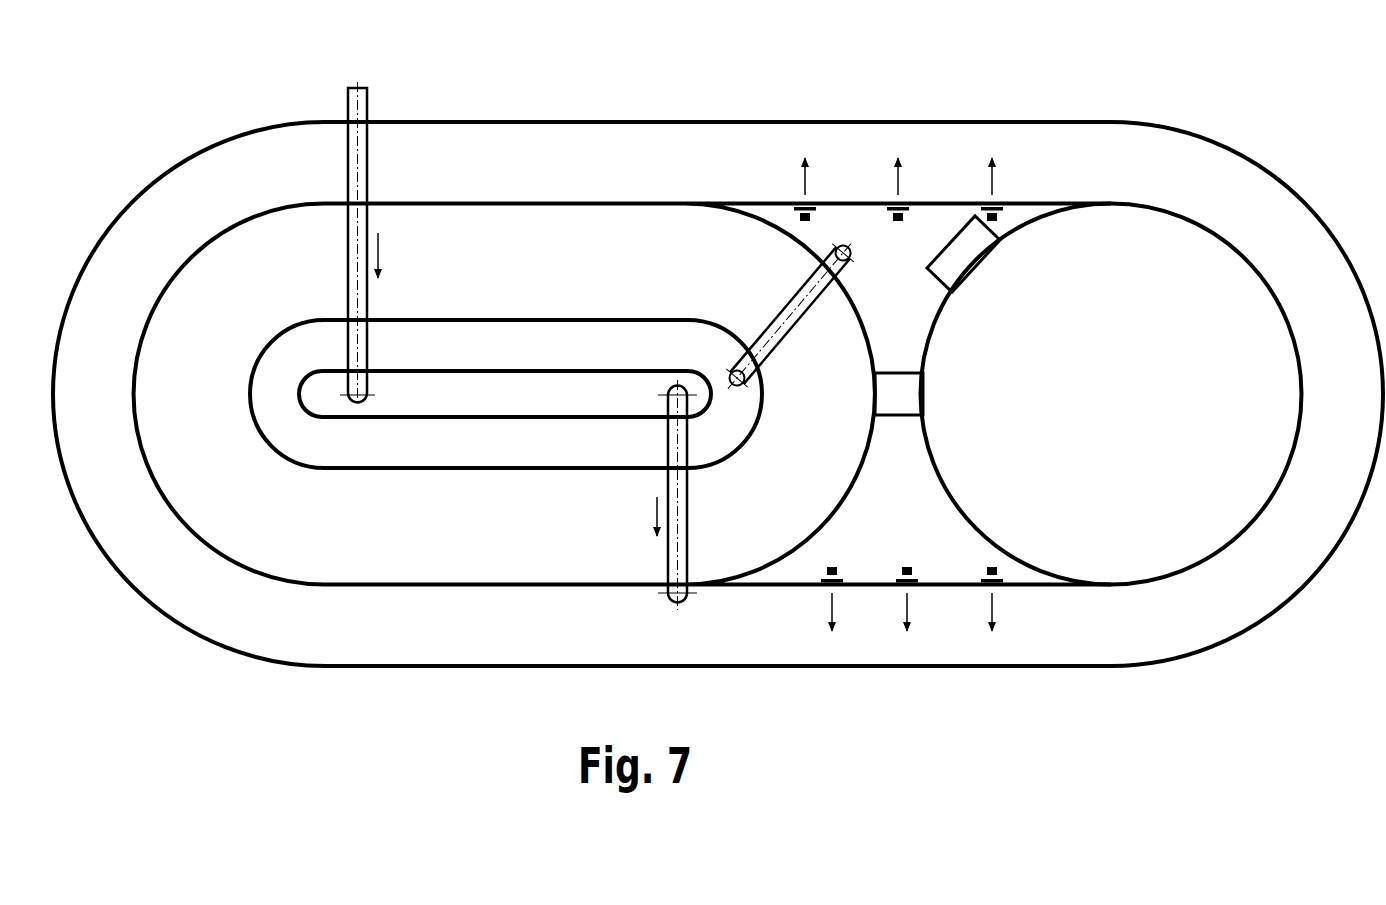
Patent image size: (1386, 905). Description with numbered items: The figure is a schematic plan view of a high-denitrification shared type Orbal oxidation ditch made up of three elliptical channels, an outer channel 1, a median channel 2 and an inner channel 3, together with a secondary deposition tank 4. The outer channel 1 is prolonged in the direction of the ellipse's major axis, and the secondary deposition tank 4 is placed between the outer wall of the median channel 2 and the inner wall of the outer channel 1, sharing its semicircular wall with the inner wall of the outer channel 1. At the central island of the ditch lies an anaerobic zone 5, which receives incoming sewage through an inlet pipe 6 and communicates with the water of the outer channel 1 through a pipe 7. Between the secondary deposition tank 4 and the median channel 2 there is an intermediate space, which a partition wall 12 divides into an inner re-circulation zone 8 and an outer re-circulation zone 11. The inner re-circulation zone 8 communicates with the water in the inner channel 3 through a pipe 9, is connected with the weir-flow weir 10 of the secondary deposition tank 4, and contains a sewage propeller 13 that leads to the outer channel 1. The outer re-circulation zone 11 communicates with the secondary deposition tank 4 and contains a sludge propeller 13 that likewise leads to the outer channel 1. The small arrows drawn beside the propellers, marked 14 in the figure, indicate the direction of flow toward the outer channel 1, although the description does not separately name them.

The outer channel 1 is at (718, 394).
The median channel 2 is at (622, 394).
The inner channel 3 is at (506, 394).
The secondary deposition tank 4 is at (1111, 394).
The anaerobic zone 5 is at (505, 394).
The inlet pipe 6 is at (349, 244).
The pipe 7 is at (686, 495).
The inner re-circulation zone 8 is at (851, 204).
The pipe 9 is at (790, 315).
The weir-flow weir 10 is at (963, 254).
The outer re-circulation zone 11 is at (870, 577).
The partition wall 12 is at (899, 394).
The propeller 13 is at (1010, 398).
The flow arrow 14 is at (1014, 394).